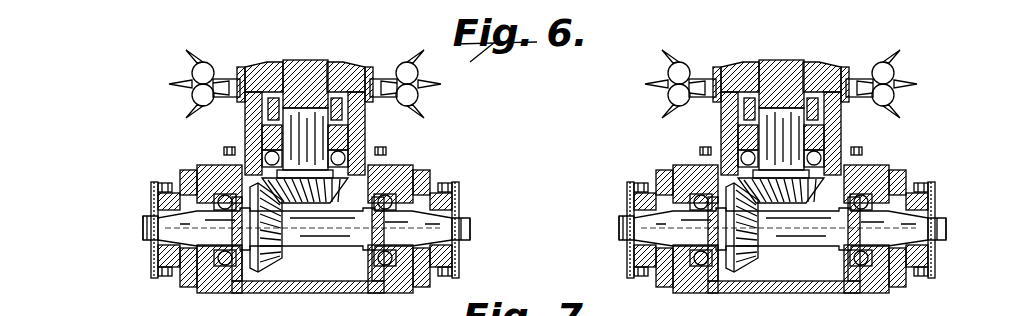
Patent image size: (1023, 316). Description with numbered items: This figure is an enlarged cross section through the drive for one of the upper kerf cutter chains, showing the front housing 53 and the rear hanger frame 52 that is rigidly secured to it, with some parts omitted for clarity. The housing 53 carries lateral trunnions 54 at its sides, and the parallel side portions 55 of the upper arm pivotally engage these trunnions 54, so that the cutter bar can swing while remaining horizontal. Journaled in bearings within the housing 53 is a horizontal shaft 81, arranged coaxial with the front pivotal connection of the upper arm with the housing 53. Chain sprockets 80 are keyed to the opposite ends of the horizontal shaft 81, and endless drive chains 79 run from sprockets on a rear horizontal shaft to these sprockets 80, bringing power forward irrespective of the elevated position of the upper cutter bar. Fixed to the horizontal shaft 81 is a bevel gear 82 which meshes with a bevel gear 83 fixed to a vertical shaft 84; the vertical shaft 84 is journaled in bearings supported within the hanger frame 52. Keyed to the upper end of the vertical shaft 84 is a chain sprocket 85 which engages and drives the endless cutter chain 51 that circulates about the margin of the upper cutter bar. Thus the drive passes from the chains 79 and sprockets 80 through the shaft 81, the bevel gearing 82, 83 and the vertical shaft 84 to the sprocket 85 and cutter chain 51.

The endless cutter chain 51 is at (208, 68).
The rear hanger frame 52 is at (247, 118).
The housing 53 is at (323, 284).
The lateral trunnions 54 is at (182, 187).
The side portions 55 is at (190, 168).
The endless drive chains 79 is at (152, 272).
The chain sprockets 80 is at (165, 250).
The horizontal shaft 81 is at (355, 240).
The bevel gear 82 is at (280, 252).
The bevel gear 83 is at (384, 152).
The vertical shaft 84 is at (308, 146).
The chain sprocket 85 is at (333, 88).